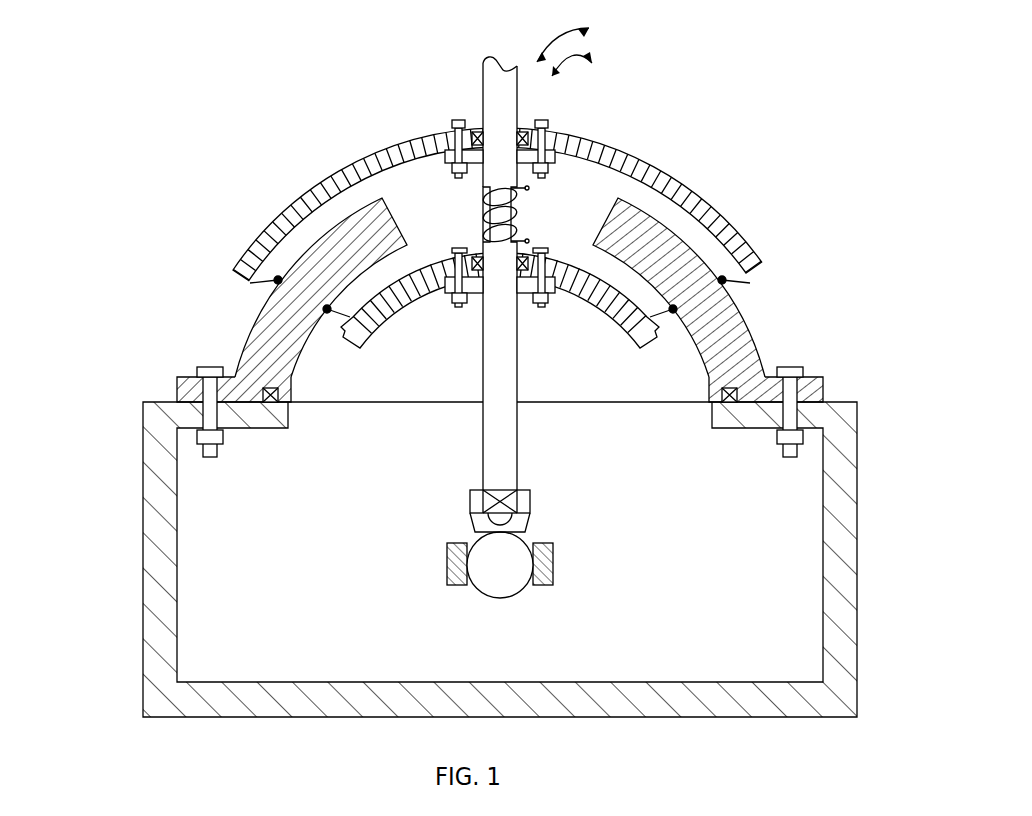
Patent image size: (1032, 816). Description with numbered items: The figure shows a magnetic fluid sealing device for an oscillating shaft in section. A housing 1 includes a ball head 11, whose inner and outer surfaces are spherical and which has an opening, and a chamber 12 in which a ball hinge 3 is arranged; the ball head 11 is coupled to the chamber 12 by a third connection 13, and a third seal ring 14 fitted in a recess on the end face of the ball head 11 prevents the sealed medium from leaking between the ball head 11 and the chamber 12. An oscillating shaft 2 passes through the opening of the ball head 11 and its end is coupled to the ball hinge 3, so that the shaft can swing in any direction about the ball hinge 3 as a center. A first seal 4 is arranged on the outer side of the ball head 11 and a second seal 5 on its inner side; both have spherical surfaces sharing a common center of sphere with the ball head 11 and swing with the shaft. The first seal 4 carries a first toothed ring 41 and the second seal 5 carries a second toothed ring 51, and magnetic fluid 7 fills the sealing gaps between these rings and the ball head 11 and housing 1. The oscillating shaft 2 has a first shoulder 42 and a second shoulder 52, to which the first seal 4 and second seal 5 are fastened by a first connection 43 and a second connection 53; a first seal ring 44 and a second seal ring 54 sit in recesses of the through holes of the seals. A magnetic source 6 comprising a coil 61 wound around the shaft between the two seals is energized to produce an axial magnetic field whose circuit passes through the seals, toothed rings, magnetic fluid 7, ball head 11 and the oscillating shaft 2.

The housing 1 is at (52, 238).
The ball head 11 is at (265, 343).
The chamber 12 is at (158, 420).
The third connection 13 is at (803, 377).
The third seal ring 14 is at (738, 390).
The oscillating shaft 2 is at (507, 435).
The ball hinge 3 is at (500, 565).
The first seal 4 is at (357, 163).
The first toothed ring 41 is at (262, 262).
The first shoulder 42 is at (548, 127).
The first connection 43 is at (448, 130).
The first seal ring 44 is at (472, 137).
The second seal 5 is at (398, 303).
The second toothed ring 51 is at (657, 330).
The second shoulder 52 is at (521, 272).
The second connection 53 is at (553, 298).
The second seal ring 54 is at (478, 275).
The magnetic source 6 is at (613, 134).
The coil 61 is at (515, 213).
The magnetic fluid 7 is at (760, 265).